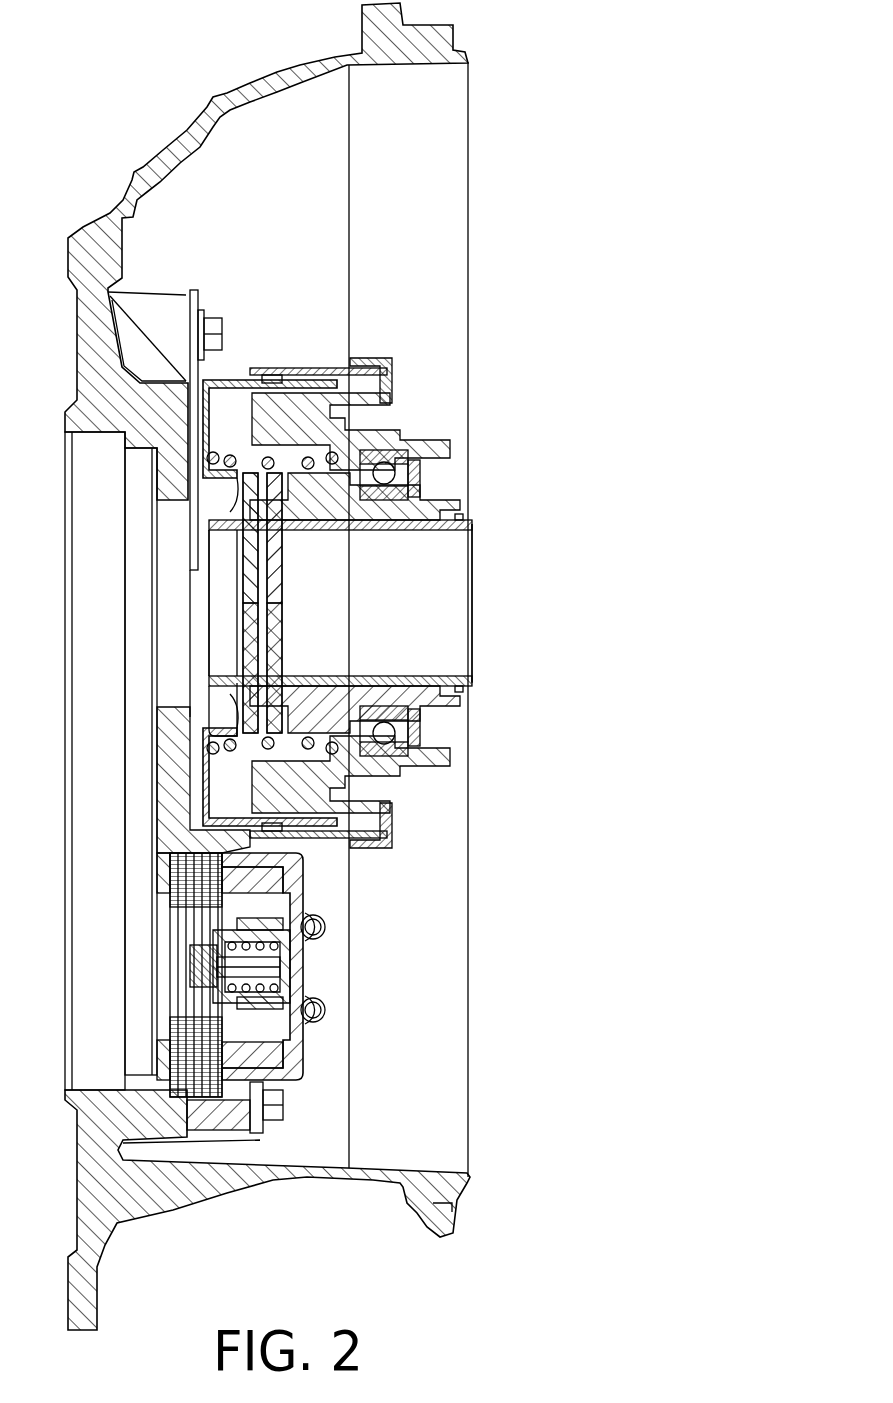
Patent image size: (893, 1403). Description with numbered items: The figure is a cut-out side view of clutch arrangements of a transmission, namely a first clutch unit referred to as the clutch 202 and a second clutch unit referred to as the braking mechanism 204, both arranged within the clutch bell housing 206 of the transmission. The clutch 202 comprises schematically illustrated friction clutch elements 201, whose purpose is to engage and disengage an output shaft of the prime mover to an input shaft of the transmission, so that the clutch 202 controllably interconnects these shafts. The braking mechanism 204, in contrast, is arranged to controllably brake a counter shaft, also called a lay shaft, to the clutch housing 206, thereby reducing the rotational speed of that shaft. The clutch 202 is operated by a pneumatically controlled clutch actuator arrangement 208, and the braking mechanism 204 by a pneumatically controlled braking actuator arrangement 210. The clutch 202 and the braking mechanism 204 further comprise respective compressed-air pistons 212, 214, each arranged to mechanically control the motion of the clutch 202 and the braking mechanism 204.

The friction clutch elements 201 is at (284, 605).
The clutch 202 is at (450, 437).
The braking mechanism 204 is at (345, 970).
The clutch bell housing 206 is at (455, 33).
The clutch actuator arrangement 208 is at (357, 443).
The braking actuator arrangement 210 is at (290, 883).
The compressed-air piston 212 is at (398, 503).
The compressed-air piston 214 is at (305, 1038).